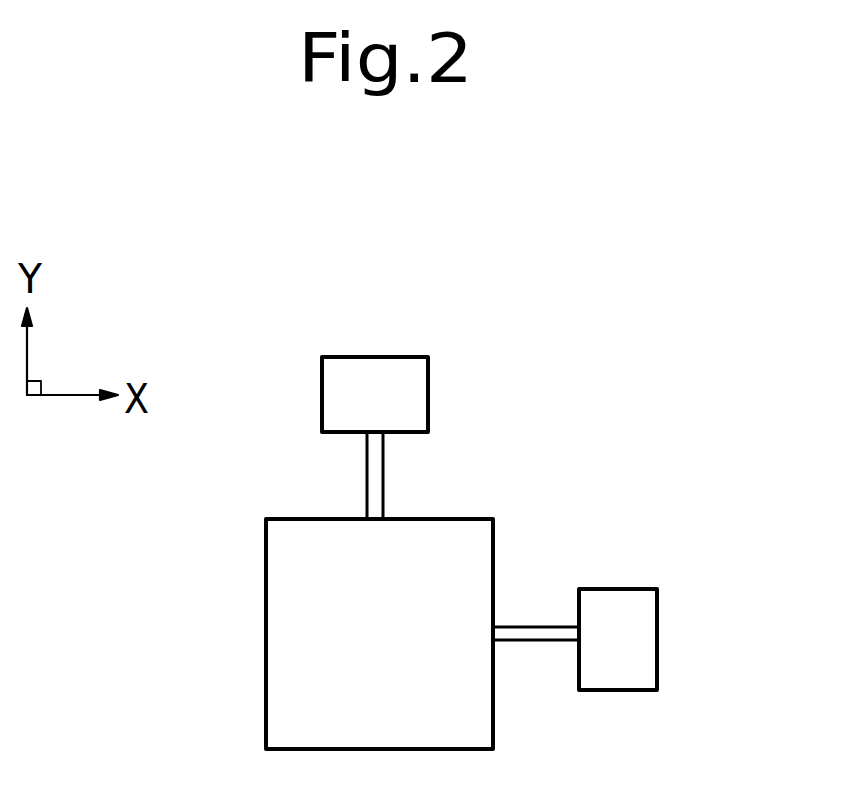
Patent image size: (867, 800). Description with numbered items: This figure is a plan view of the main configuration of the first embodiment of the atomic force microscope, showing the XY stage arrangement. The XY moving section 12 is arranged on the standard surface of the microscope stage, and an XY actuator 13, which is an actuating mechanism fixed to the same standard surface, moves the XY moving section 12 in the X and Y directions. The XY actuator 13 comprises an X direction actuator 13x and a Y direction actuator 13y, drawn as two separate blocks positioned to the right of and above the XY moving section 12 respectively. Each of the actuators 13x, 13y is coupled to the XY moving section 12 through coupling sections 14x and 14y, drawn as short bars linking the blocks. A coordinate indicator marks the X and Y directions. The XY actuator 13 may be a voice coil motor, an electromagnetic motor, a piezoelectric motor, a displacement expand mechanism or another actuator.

The XY moving section 12 is at (277, 633).
The XY actuator 13 is at (556, 524).
The X direction actuator 13x is at (642, 647).
The Y direction actuator 13y is at (413, 395).
The coupling section 14x is at (535, 628).
The coupling section 14y is at (375, 483).